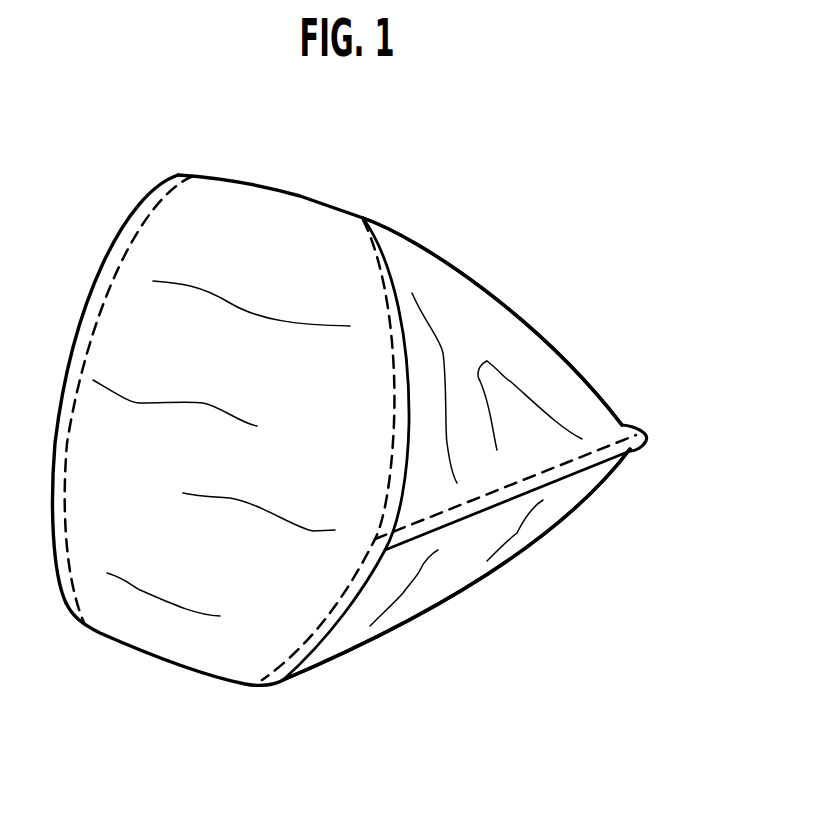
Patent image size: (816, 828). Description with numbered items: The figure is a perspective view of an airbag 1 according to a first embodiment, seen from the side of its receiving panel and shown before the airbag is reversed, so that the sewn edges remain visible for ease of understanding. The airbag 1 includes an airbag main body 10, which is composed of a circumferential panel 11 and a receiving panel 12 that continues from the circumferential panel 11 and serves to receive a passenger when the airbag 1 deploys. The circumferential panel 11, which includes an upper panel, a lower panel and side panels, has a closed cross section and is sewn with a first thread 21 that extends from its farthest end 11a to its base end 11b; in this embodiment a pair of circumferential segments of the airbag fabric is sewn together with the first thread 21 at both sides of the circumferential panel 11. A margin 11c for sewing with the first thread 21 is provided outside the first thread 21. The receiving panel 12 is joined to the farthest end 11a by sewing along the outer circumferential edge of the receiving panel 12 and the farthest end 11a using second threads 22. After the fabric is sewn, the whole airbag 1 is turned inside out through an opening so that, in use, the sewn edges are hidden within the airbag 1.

The airbag 1 is at (400, 177).
The airbag main body 10 is at (548, 333).
The circumferential panel 11 is at (560, 380).
The farthest end 11a is at (385, 547).
The base end 11b is at (640, 423).
The margin 11c is at (450, 517).
The receiving panel 12 is at (263, 215).
The first thread 21 is at (487, 497).
The second threads 22 is at (130, 233).